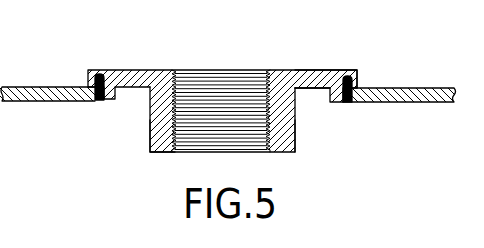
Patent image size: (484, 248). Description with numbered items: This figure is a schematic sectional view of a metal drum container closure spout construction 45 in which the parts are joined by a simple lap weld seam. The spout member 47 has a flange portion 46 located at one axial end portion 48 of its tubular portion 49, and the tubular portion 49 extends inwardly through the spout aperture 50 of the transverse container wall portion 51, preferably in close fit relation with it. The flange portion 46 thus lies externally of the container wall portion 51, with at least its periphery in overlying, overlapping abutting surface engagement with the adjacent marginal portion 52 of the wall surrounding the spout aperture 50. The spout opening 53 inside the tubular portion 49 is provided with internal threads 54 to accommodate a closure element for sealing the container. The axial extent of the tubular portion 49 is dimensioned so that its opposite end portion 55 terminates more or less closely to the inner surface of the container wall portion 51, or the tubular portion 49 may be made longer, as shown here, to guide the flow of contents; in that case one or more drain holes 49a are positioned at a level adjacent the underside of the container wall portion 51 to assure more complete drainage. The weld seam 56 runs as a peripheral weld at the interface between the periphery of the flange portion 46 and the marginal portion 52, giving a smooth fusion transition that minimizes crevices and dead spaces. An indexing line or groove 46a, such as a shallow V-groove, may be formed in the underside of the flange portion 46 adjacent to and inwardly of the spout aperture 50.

The closure spout construction 45 is at (130, 54).
The flange portion 46 is at (300, 70).
The indexing line or groove 46a is at (320, 90).
The spout member 47 is at (152, 69).
The axial end portion 48 is at (149, 96).
The tubular portion 49 is at (149, 122).
The drain holes 49a is at (297, 135).
The spout aperture 50 is at (326, 96).
The container wall portion 51 is at (422, 88).
The marginal portion 52 is at (50, 87).
The spout opening 53 is at (226, 89).
The internal threads 54 is at (268, 138).
The opposite end portion 55 is at (149, 138).
The weld seam 56 is at (356, 87).